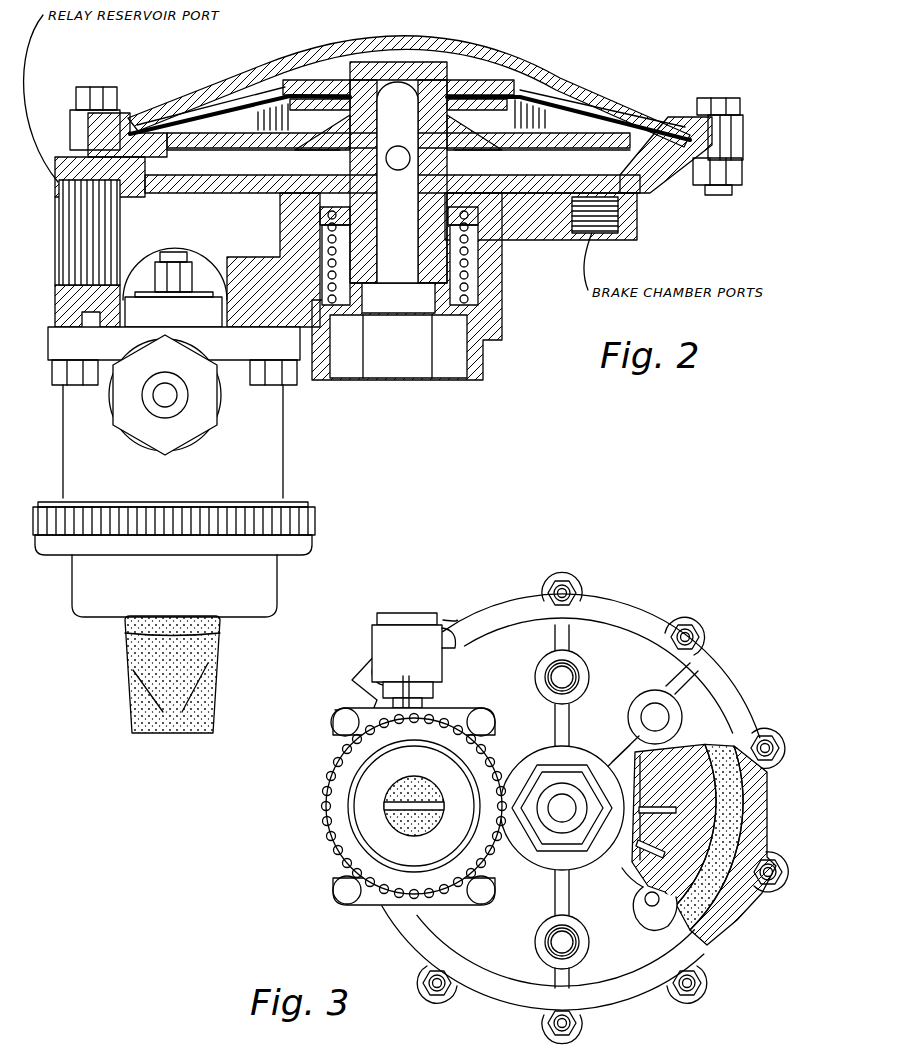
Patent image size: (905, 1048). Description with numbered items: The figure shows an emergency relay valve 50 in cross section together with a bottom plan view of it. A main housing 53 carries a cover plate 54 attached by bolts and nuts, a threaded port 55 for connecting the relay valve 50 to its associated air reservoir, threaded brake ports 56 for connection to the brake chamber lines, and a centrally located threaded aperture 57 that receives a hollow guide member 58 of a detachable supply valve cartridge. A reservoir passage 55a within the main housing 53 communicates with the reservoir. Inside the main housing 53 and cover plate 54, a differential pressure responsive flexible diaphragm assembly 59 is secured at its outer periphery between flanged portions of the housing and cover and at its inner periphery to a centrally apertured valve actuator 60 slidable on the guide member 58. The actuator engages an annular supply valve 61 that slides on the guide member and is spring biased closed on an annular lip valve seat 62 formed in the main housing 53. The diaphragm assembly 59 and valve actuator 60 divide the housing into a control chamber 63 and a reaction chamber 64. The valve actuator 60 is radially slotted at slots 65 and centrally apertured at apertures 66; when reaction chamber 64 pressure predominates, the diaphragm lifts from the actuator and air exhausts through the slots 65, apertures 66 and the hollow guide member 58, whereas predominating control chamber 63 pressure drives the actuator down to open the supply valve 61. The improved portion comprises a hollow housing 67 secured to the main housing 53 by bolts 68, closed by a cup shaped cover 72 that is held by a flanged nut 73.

In FIG. 2, the relay valve 50 is at (550, 57).
In FIG. 3, the relay valve 50 is at (639, 606).
In FIG. 2, the main housing 53 is at (657, 180).
In FIG. 3, the main housing 53 is at (501, 628).
In FIG. 2, the cover plate 54 is at (625, 110).
In FIG. 2, the threaded port 55 is at (67, 182).
In FIG. 2, the reservoir passage 55a is at (157, 212).
In FIG. 2, the threaded brake ports 56 is at (612, 232).
In FIG. 3, the threaded brake ports 56 is at (572, 680).
In FIG. 2, the centrally located threaded aperture 57 is at (483, 293).
In FIG. 2, the hollow guide member 58 is at (477, 357).
In FIG. 3, the hollow guide member 58 is at (575, 768).
In FIG. 2, the flexible diaphragm assembly 59 is at (223, 133).
In FIG. 3, the flexible diaphragm assembly 59 is at (735, 800).
In FIG. 2, the valve actuator 60 is at (200, 133).
In FIG. 3, the valve actuator 60 is at (700, 836).
In FIG. 2, the supply valve 61 is at (493, 250).
In FIG. 2, the annular lip valve seat 62 is at (472, 215).
In FIG. 2, the control chamber 63 is at (257, 120).
In FIG. 2, the reaction chamber 64 is at (220, 163).
In FIG. 2, the radial slots 65 is at (520, 110).
In FIG. 3, the radial slots 65 is at (631, 868).
In FIG. 2, the central apertures 66 is at (453, 133).
In FIG. 2, the hollow housing 67 is at (285, 463).
In FIG. 2, the bolts 68 is at (288, 398).
In FIG. 3, the bolts 68 is at (492, 722).
In FIG. 2, the cup shaped cover 72 is at (86, 603).
In FIG. 3, the cup shaped cover 72 is at (360, 790).
In FIG. 2, the flanged nut 73 is at (312, 525).
In FIG. 3, the flanged nut 73 is at (338, 833).